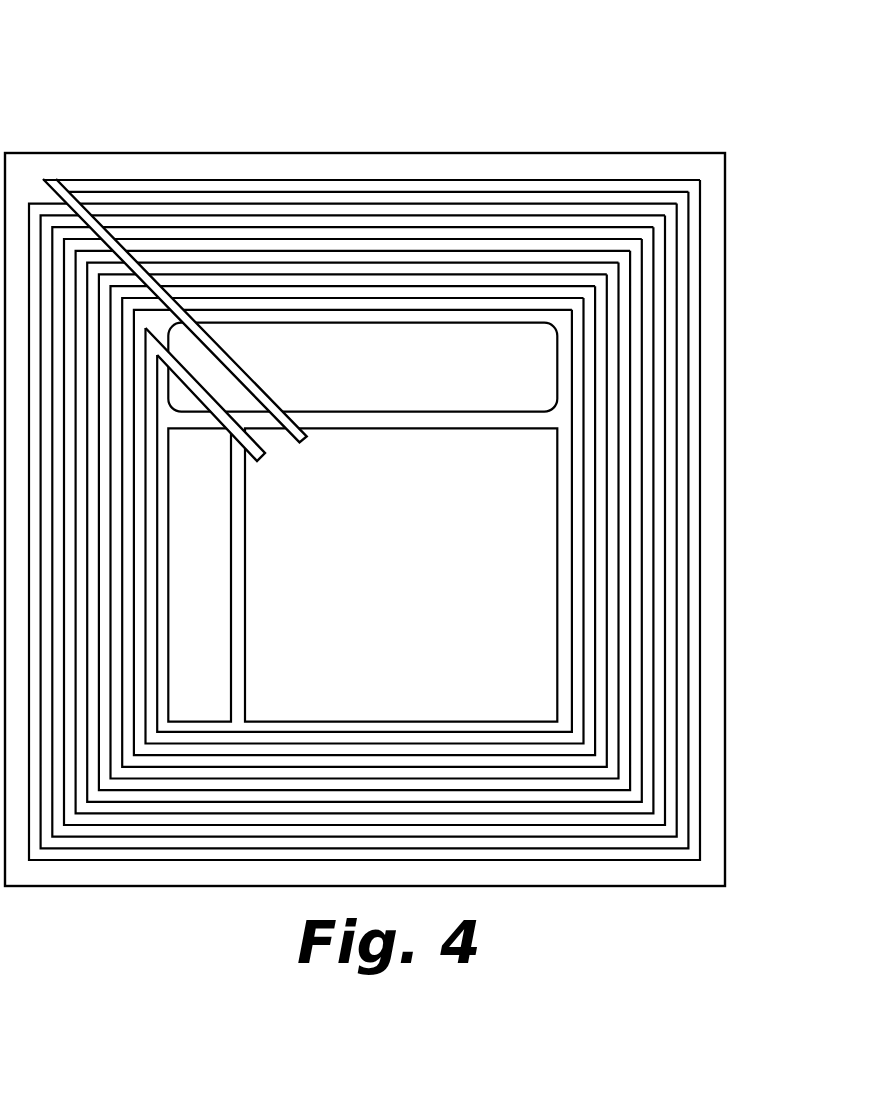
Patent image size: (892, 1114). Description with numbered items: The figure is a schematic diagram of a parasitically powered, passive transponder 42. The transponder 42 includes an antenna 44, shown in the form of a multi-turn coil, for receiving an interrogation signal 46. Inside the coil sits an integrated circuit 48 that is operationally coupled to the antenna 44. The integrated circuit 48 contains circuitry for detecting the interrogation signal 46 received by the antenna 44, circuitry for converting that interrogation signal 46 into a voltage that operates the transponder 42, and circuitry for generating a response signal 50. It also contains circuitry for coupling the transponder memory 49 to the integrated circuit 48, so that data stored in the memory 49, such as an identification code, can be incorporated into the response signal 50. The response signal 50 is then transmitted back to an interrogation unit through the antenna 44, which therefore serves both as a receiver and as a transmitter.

The passive transponder 42 is at (712, 105).
The antenna 44 is at (400, 232).
The interrogation signal 46 is at (130, 137).
The integrated circuit 48 is at (412, 599).
The transponder memory 49 is at (383, 386).
The response signal 50 is at (333, 30).